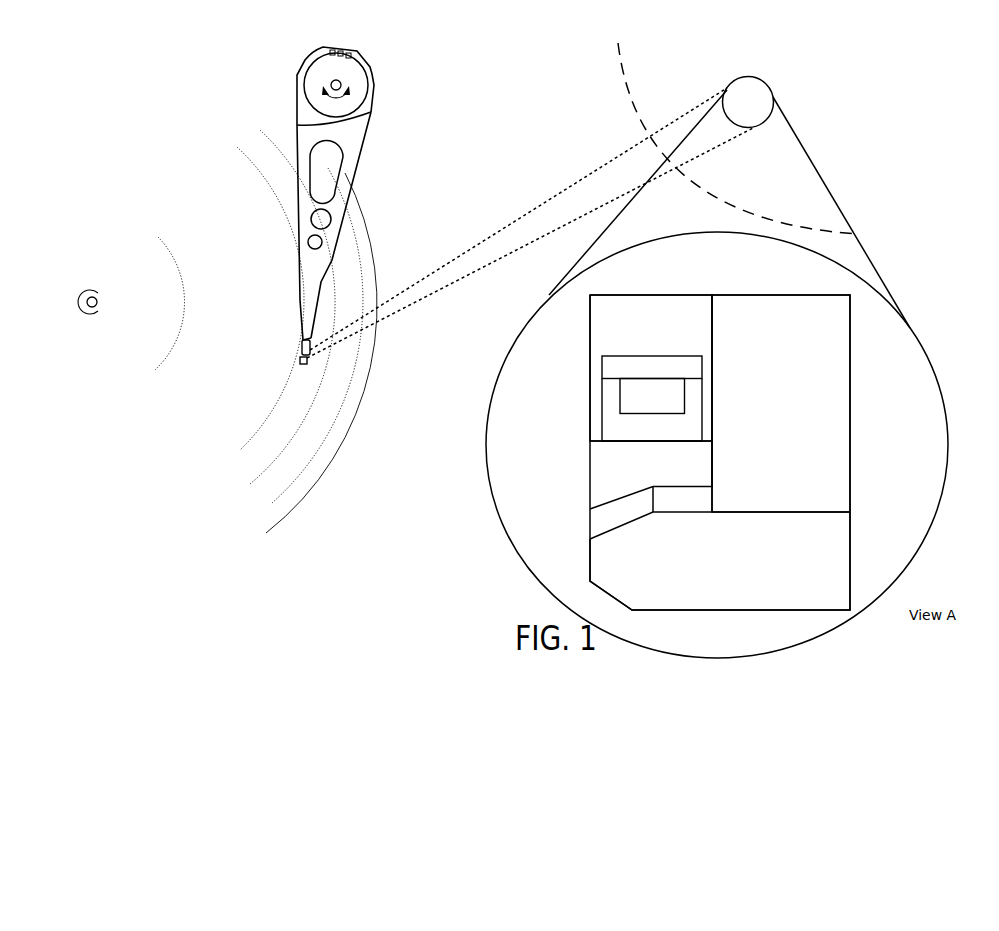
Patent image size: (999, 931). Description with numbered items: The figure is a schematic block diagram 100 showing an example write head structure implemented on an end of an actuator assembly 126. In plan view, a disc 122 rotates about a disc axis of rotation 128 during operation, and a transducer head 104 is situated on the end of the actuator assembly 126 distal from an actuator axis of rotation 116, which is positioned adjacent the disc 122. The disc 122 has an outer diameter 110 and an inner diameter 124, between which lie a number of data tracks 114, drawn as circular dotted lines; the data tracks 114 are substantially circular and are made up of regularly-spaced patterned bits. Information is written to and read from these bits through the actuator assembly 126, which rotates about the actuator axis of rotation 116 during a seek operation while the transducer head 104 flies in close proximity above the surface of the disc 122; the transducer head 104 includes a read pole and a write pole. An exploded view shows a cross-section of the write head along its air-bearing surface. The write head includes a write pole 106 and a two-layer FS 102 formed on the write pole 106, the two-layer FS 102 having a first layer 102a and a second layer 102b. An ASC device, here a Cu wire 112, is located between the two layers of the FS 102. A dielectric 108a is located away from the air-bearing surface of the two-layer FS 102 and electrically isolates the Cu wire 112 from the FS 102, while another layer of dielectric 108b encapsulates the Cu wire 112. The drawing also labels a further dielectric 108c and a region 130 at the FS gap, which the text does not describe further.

The schematic block diagram 100 is at (176, 87).
The two-layer FS 102 is at (571, 295).
The first layer 102a is at (651, 475).
The second layer 102b is at (651, 368).
The transducer head 104 is at (300, 364).
The write pole 106 is at (720, 561).
The dielectric 108a is at (781, 403).
The dielectric layer 108b is at (652, 410).
The dielectric layer 108c is at (652, 367).
The outer diameter 110 is at (282, 493).
The Cu wire 112 is at (652, 397).
The data tracks 114 is at (253, 479).
The actuator axis of rotation 116 is at (329, 83).
The disc 122 is at (768, 81).
The inner diameter 124 is at (170, 340).
The actuator assembly 126 is at (330, 86).
The disc axis of rotation 128 is at (104, 303).
The flux shield gap 130 is at (720, 513).